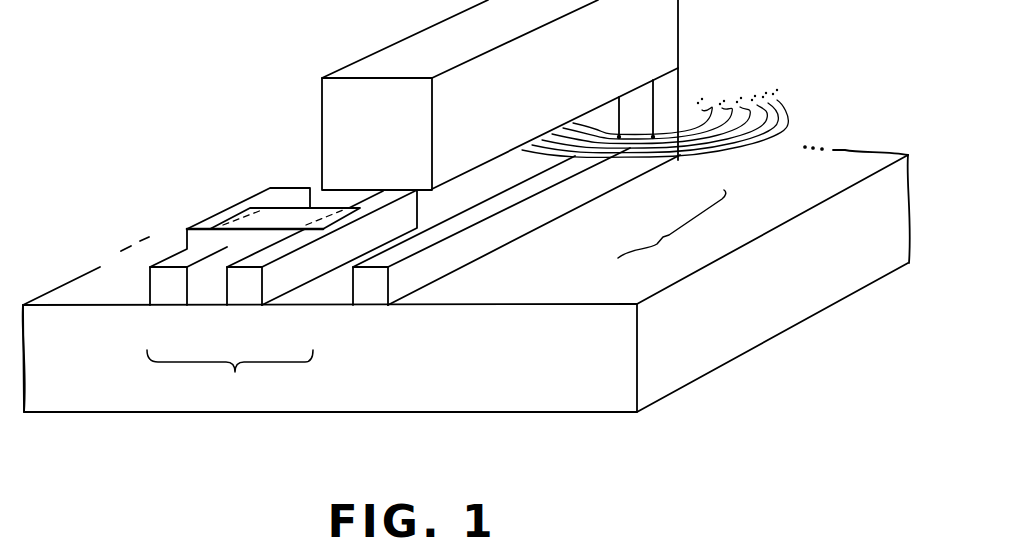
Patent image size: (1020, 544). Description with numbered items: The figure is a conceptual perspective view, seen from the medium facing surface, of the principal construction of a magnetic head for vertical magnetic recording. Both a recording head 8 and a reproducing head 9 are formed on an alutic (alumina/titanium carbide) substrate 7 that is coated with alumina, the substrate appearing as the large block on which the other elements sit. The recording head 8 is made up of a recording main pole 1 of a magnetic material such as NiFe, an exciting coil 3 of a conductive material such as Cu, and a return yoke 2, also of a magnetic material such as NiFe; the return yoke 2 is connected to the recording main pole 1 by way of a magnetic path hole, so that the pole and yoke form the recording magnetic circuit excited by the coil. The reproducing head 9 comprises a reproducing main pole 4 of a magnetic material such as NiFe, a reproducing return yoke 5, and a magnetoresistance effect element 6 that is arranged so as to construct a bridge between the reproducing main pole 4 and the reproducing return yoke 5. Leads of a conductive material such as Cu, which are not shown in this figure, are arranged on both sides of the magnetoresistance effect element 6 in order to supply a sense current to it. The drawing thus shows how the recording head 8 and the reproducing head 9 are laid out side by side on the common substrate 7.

The recording main pole 1 is at (480, 245).
The return yoke 2 is at (483, 140).
The exciting coil 3 is at (696, 150).
The reproducing main pole 4 is at (247, 292).
The reproducing return yoke 5 is at (173, 292).
The magnetoresistance effect element 6 is at (277, 217).
The substrate 7 is at (445, 385).
The recording head 8 is at (672, 229).
The reproducing head 9 is at (230, 377).